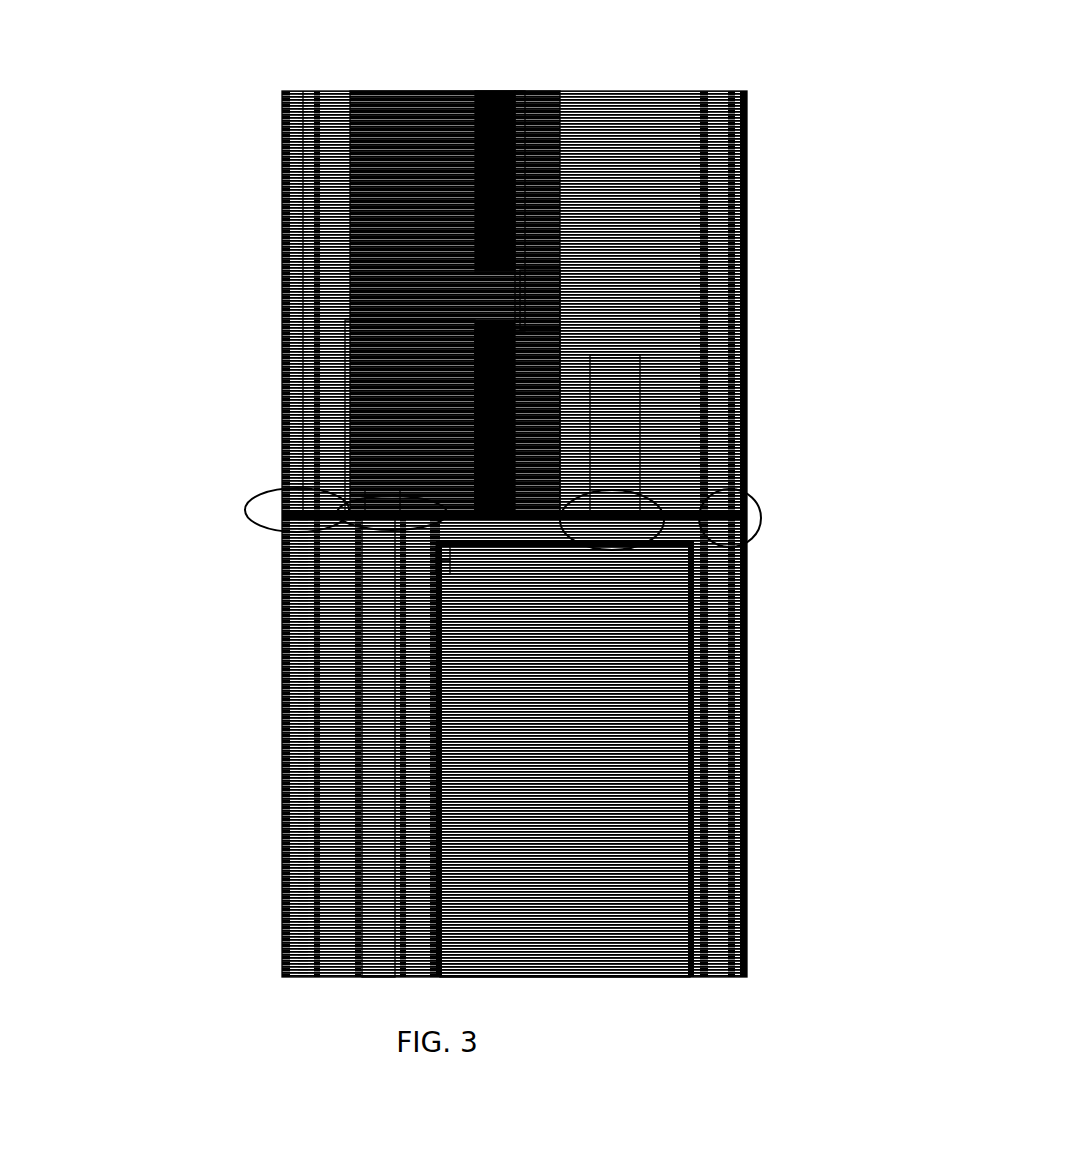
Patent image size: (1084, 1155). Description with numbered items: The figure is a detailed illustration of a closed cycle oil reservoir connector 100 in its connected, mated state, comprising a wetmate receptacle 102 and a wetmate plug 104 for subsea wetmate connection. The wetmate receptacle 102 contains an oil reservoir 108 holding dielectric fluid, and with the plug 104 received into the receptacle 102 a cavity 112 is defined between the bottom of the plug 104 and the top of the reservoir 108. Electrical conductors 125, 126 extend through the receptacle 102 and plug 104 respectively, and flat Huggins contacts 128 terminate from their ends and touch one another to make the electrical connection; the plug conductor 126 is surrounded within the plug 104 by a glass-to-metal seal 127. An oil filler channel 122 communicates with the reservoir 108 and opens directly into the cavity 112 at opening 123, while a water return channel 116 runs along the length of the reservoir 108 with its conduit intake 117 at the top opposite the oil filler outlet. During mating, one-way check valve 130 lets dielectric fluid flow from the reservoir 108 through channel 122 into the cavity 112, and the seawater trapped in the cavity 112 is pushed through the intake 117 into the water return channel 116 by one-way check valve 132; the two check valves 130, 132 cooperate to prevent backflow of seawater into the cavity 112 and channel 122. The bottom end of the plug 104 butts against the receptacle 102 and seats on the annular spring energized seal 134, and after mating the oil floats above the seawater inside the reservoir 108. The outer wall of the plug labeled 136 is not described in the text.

The connector 100 is at (816, 966).
The wetmate receptacle 102 is at (267, 920).
The wetmate plug 104 is at (365, 255).
The oil reservoir 108 is at (600, 998).
The cavity 112 is at (400, 370).
The water return channel 116 is at (380, 585).
The conduit intake 117 is at (365, 480).
The oil filler channel 122 is at (625, 463).
The opening 123 is at (520, 338).
The conductor 125 is at (520, 430).
The conductor 126 is at (520, 92).
The glass-to-metal seal 127 is at (500, 185).
The flat Huggins contacts 128 is at (540, 300).
The one-way check valve 130 is at (440, 552).
The one-way check valve 132 is at (440, 565).
The spring energized seal 134 is at (810, 582).
The plug housing 136 is at (305, 128).